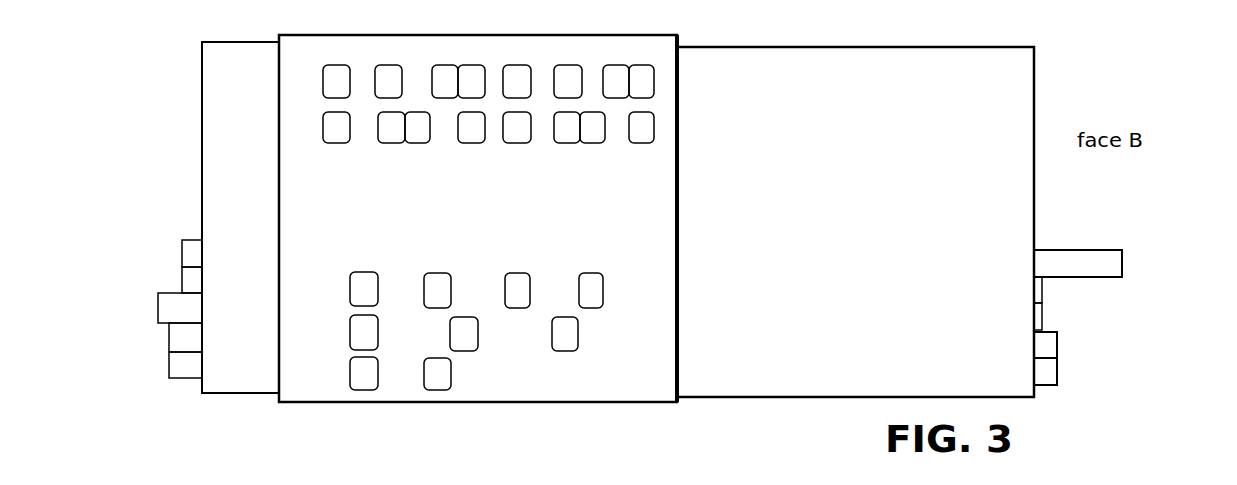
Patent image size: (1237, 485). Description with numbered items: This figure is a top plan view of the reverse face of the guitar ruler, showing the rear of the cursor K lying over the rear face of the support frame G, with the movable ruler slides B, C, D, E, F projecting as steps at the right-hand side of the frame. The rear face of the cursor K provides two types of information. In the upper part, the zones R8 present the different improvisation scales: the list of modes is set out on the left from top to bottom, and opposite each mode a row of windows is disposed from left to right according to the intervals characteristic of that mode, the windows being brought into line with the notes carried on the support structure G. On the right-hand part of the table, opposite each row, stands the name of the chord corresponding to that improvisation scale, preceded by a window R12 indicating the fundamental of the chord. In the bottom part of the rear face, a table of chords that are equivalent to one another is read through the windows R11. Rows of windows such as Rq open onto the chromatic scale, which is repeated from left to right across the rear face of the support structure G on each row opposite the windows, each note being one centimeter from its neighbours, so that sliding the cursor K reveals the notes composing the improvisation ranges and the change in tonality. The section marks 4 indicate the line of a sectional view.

The cursor K is at (367, 75).
The row of keys Rq is at (556, 70).
The window indicating the fundamental of the chord R12 is at (642, 66).
The zones of improvisation scales R8 is at (100, 160).
The windows of the equivalent chord table R11 is at (539, 386).
The support frame G is at (973, 67).
The ruler slide F is at (1107, 263).
The ruler slide E is at (1035, 292).
The ruler slide D is at (1035, 317).
The ruler slide C is at (1045, 345).
The ruler slide B is at (1045, 372).
The section line 4 is at (157, 413).